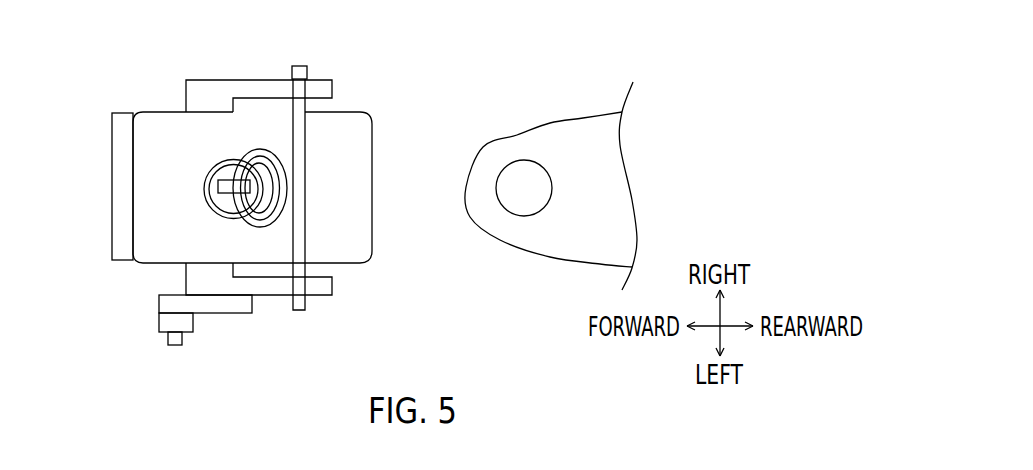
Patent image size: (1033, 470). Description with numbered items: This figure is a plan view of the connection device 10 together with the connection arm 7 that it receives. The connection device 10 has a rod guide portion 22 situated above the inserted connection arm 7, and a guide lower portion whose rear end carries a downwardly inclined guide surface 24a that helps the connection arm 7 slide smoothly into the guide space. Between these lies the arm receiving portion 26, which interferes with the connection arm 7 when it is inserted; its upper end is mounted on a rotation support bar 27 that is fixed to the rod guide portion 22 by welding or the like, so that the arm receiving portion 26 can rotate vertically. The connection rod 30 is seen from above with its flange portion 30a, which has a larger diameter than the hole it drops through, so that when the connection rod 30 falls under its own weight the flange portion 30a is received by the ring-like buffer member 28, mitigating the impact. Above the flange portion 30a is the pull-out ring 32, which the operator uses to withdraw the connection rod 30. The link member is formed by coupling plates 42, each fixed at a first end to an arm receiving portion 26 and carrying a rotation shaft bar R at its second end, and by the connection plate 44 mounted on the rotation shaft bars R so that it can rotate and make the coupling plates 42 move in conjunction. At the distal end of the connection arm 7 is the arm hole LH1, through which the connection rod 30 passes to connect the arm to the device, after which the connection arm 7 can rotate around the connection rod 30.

The connection device 10 is at (107, 62).
The rod guide portion 22 is at (162, 137).
The guide surface 24a is at (345, 155).
The arm receiving portion 26 is at (222, 87).
The rotation support bar 27 is at (299, 65).
The buffer member 28 is at (227, 160).
The connection rod 30 is at (204, 200).
The flange portion 30a is at (228, 203).
The pull-out ring 32 is at (277, 170).
The coupling plate 42 is at (223, 307).
The connection plate 44 is at (167, 320).
The rotation shaft bar R is at (174, 347).
The connection arm 7 is at (583, 150).
The arm hole LH1 is at (518, 173).